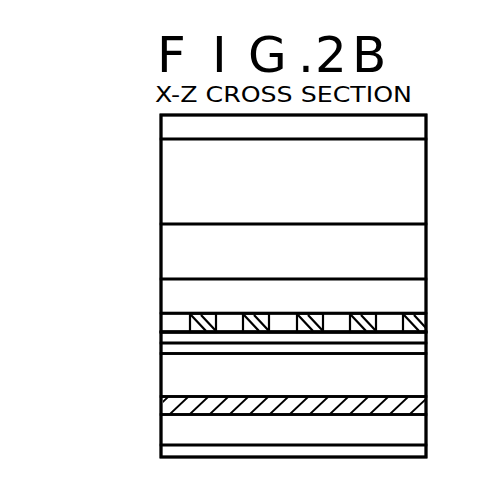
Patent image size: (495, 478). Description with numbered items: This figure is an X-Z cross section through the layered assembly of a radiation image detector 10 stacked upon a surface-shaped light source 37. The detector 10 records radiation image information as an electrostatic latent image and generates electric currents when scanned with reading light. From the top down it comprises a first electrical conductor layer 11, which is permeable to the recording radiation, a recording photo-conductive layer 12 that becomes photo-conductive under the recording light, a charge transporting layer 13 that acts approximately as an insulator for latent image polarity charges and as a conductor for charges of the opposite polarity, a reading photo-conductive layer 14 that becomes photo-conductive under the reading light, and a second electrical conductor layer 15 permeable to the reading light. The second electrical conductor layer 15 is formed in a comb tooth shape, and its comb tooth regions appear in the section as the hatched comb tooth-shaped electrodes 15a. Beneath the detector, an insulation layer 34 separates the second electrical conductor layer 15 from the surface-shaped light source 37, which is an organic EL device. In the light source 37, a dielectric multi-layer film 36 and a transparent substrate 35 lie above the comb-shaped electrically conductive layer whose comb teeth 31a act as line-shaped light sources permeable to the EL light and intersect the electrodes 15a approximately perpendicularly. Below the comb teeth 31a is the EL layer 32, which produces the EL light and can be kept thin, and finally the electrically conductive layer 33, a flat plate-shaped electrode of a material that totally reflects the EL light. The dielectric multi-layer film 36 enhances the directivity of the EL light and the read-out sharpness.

The radiation image detector 10 is at (86, 115).
The first electrical conductor layer 11 is at (161, 128).
The recording photo-conductive layer 12 is at (161, 180).
The charge transporting layer 13 is at (161, 248).
The reading photo-conductive layer 14 is at (161, 296).
The second electrical conductor layer 15 is at (161, 324).
The comb tooth-shaped electrode 15a is at (427, 319).
The surface-shaped light source 37 is at (89, 458).
The insulation layer 34 is at (161, 338).
The dielectric multi-layer film 36 is at (161, 352).
The transparent substrate 35 is at (161, 372).
The comb tooth 31a is at (161, 403).
The EL layer 32 is at (161, 427).
The electrically conductive layer 33 is at (161, 450).